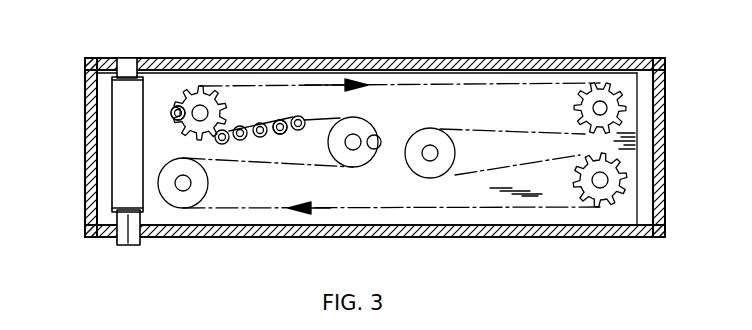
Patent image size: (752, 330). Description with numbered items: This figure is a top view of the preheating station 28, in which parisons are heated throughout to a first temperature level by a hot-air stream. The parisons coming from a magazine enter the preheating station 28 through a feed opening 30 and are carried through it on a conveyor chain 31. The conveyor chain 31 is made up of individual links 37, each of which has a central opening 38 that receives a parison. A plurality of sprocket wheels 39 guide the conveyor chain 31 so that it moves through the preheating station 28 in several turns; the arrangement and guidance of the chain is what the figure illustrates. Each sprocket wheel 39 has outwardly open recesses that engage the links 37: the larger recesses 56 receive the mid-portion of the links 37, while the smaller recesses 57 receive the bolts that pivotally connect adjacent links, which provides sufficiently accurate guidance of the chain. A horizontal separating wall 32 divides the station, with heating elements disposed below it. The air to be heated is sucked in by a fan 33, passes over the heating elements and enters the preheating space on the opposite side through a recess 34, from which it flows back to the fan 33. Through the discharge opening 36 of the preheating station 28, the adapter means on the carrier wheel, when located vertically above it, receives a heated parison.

The preheating station 28 is at (441, 48).
The feed opening 30 is at (175, 113).
The conveyor chain 31 is at (470, 84).
The horizontal separating wall 32 is at (400, 203).
The fan 33 is at (122, 152).
The recess 34 is at (645, 158).
The discharge opening 36 is at (379, 138).
The link 37 is at (262, 124).
The central opening 38 is at (284, 133).
The sprocket wheel 39 is at (577, 108).
The larger recess 56 is at (203, 86).
The smaller recess 57 is at (211, 88).